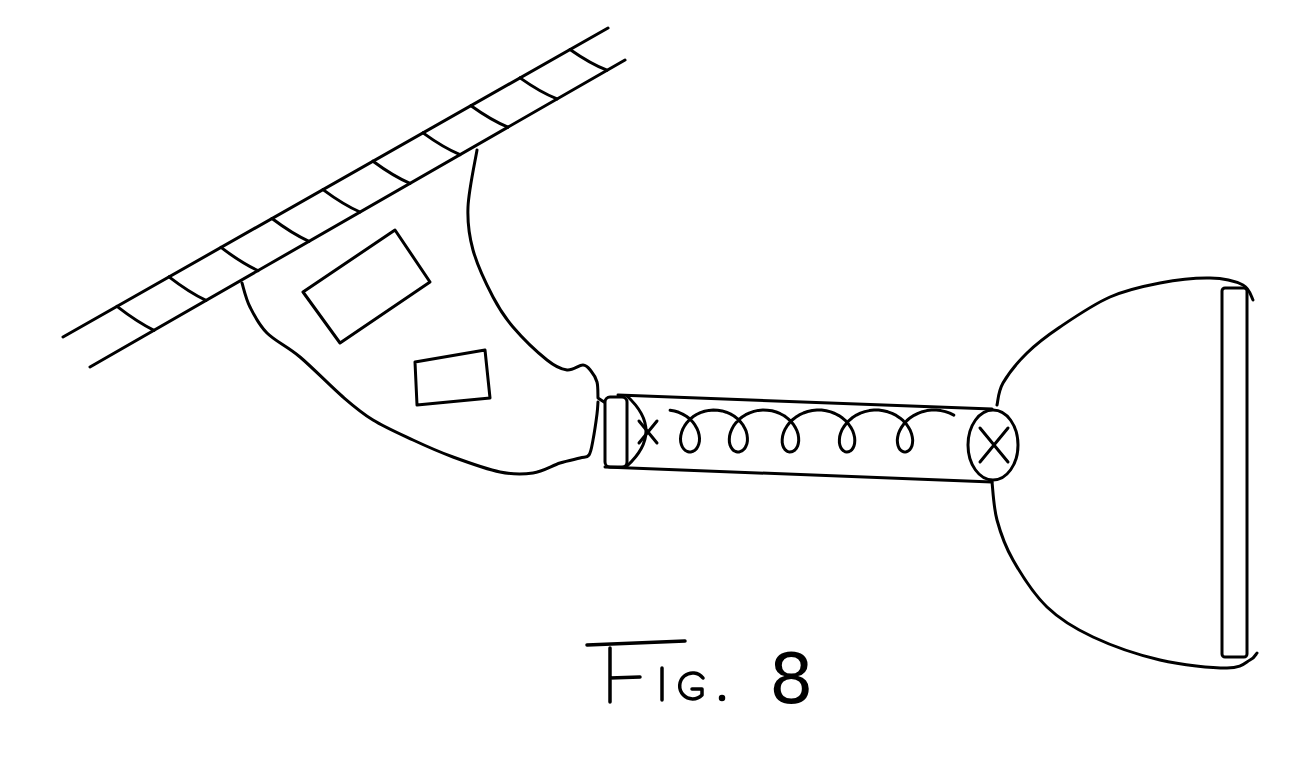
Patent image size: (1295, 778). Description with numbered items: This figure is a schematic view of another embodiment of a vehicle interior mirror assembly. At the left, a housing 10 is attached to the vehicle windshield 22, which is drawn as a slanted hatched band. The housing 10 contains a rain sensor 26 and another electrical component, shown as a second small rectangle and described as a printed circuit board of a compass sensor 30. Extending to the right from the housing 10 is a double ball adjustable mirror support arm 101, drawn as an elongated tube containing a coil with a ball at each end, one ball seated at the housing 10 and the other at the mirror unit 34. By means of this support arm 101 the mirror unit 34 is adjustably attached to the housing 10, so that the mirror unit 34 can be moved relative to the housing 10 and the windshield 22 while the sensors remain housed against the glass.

The vehicle windshield 22 is at (570, 90).
The housing 10 is at (477, 290).
The rain sensor 26 is at (332, 313).
The compass sensor 30 is at (447, 390).
The double ball adjustable mirror support arm 101 is at (830, 398).
The mirror unit 34 is at (1083, 318).